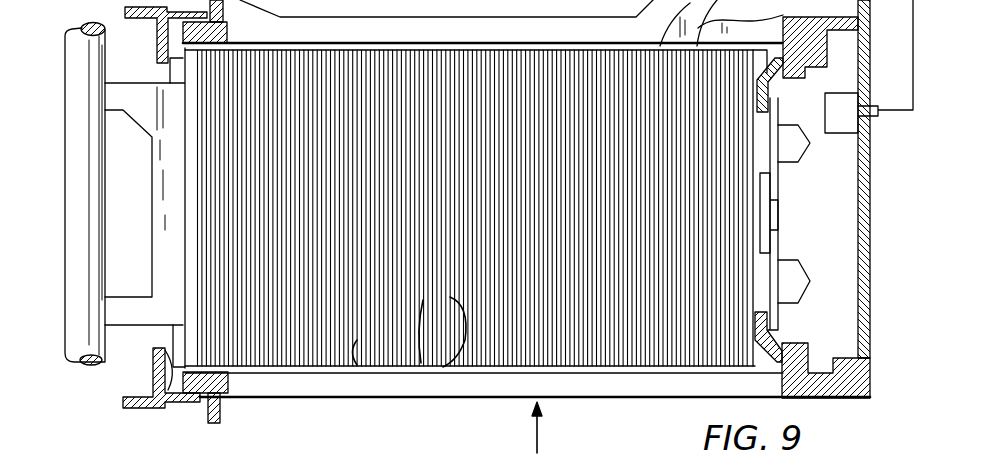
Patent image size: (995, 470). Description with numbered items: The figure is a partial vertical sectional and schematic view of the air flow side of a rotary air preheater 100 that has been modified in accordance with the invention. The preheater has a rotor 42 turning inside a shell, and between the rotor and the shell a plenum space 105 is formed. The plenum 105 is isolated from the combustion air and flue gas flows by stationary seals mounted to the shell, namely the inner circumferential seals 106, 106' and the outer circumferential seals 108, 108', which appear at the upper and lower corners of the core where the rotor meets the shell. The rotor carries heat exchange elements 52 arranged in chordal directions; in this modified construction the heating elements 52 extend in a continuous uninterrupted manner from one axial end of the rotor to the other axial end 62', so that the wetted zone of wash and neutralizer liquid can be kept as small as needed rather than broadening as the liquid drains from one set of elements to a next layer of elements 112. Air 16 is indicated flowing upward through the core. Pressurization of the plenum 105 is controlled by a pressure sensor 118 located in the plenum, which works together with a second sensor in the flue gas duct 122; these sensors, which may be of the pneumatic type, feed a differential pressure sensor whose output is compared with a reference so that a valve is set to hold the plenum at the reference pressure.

The air flow 16 is at (536, 445).
The rotor 42 is at (285, 366).
The heat exchange elements 52 is at (357, 373).
The axial end 62' is at (628, 405).
The rotary air preheater 100 is at (872, 310).
The plenum space 105 is at (150, 330).
The inner circumferential seal 106 is at (161, 42).
The inner circumferential seal 106' is at (161, 395).
The outer circumferential seal 108 is at (791, 86).
The outer circumferential seal 108' is at (801, 335).
The layer of elements 112 is at (376, 3).
The pressure sensor 118 is at (836, 136).
The flue gas duct 122 is at (777, 38).